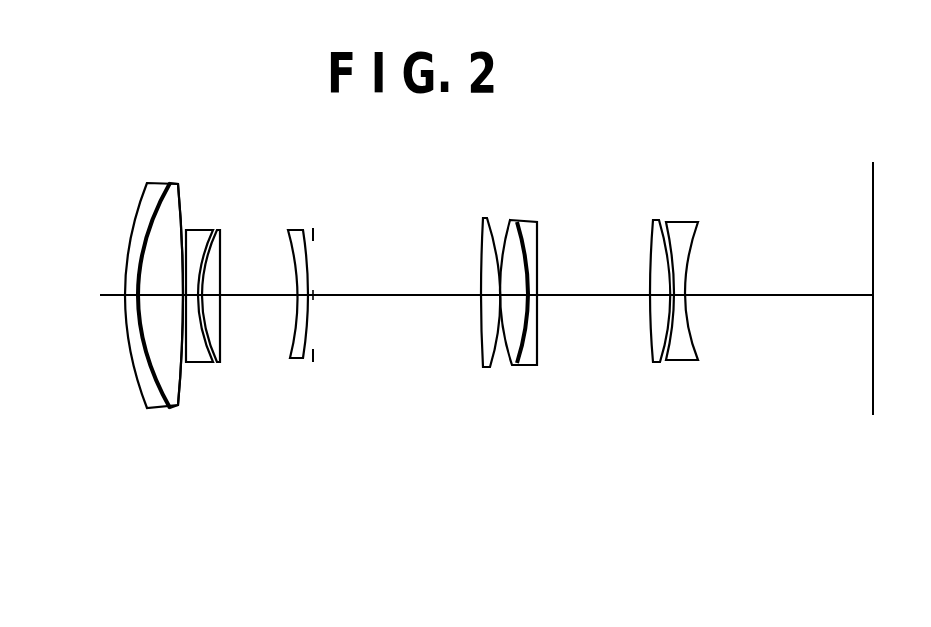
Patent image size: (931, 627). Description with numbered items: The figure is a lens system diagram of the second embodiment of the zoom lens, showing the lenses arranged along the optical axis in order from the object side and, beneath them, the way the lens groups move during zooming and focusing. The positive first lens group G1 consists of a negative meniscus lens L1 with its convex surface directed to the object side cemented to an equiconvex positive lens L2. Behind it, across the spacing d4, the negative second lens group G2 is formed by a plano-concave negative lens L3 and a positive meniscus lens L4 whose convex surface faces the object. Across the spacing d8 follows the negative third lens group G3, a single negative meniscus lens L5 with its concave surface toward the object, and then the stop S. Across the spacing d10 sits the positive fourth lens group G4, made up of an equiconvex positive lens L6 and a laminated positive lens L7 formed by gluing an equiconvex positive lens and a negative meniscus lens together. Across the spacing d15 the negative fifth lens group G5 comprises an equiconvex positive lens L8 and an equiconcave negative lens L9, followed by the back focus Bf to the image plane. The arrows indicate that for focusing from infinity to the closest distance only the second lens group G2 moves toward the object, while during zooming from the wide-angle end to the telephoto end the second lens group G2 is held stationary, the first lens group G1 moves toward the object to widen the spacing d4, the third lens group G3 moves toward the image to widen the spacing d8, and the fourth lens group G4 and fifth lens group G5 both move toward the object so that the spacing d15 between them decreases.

The negative meniscus lens L1 is at (157, 182).
The equiconvex positive lens L2 is at (181, 184).
The plano-concave negative lens L3 is at (205, 228).
The positive meniscus lens L4 is at (218, 228).
The negative meniscus lens L5 is at (298, 228).
The equiconvex positive lens L6 is at (483, 216).
The laminated positive lens L7 is at (530, 220).
The equiconvex positive lens L8 is at (655, 218).
The equiconcave negative lens L9 is at (686, 220).
The stop S is at (314, 232).
The lens surface spacing d4 is at (184, 318).
The lens surface spacing d8 is at (260, 297).
The lens surface spacing d10 is at (420, 297).
The lens surface spacing d15 is at (605, 297).
The back focus Bf is at (790, 297).
The first lens group G1 is at (116, 344).
The second lens group G2 is at (236, 362).
The third lens group G3 is at (297, 347).
The fourth lens group G4 is at (486, 345).
The fifth lens group G5 is at (634, 344).